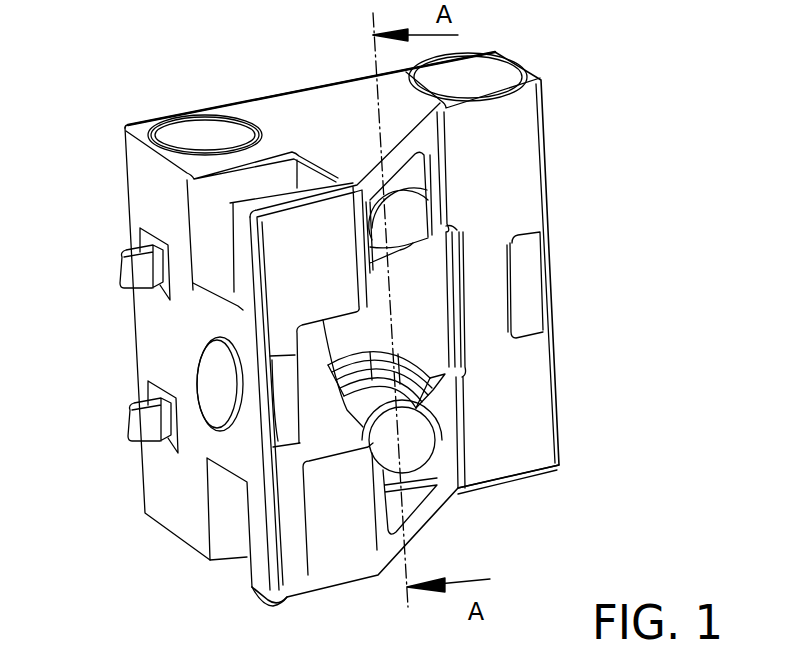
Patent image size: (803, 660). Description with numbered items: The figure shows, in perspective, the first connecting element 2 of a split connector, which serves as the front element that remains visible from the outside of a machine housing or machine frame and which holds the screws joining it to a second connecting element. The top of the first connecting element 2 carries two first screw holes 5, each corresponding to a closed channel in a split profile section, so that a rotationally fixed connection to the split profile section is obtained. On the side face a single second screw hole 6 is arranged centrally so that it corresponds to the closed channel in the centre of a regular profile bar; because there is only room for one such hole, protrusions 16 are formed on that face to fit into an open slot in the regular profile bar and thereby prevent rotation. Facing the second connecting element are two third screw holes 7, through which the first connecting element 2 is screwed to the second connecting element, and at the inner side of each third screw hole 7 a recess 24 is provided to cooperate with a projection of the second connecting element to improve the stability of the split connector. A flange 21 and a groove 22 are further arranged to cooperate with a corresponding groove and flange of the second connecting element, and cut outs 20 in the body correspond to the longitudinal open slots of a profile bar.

The first connecting element 2 is at (342, 327).
The first screw hole 5 is at (200, 133).
The second screw hole 6 is at (215, 383).
The third screw hole 7 is at (393, 208).
The protrusion 16 is at (128, 268).
The cut out 20 is at (281, 180).
The flange 21 is at (278, 590).
The groove 22 is at (555, 468).
The recess 24 is at (440, 168).